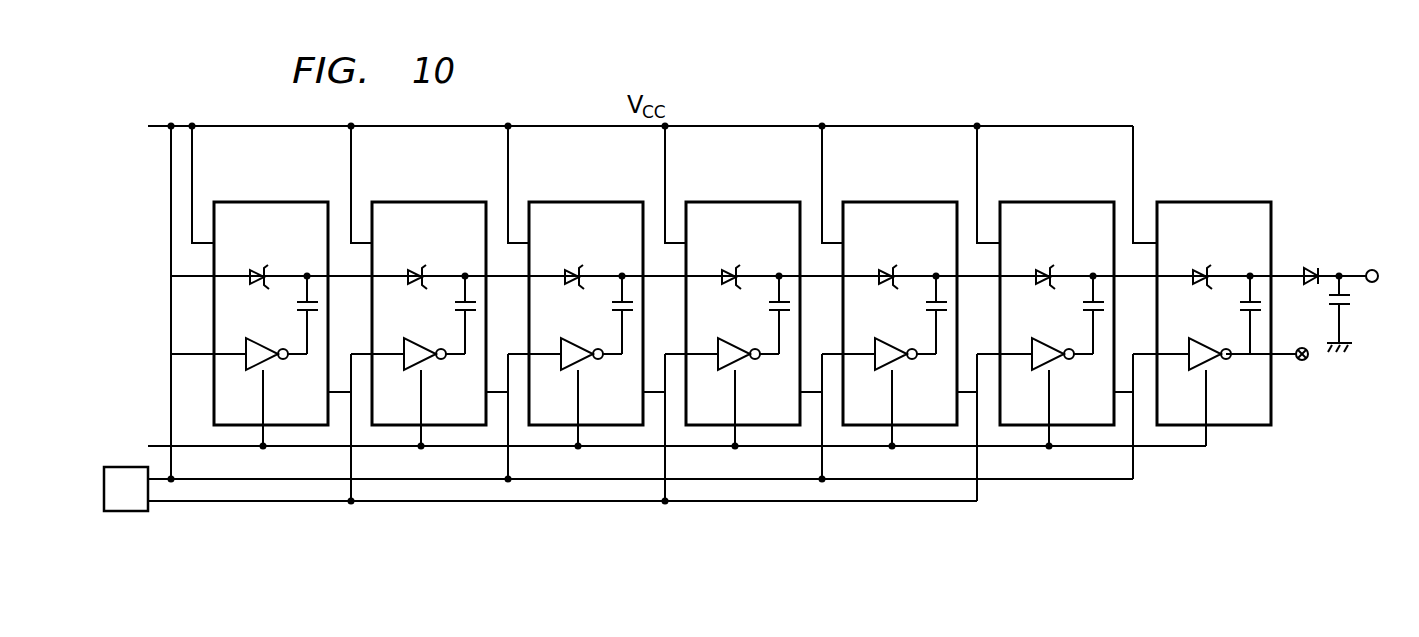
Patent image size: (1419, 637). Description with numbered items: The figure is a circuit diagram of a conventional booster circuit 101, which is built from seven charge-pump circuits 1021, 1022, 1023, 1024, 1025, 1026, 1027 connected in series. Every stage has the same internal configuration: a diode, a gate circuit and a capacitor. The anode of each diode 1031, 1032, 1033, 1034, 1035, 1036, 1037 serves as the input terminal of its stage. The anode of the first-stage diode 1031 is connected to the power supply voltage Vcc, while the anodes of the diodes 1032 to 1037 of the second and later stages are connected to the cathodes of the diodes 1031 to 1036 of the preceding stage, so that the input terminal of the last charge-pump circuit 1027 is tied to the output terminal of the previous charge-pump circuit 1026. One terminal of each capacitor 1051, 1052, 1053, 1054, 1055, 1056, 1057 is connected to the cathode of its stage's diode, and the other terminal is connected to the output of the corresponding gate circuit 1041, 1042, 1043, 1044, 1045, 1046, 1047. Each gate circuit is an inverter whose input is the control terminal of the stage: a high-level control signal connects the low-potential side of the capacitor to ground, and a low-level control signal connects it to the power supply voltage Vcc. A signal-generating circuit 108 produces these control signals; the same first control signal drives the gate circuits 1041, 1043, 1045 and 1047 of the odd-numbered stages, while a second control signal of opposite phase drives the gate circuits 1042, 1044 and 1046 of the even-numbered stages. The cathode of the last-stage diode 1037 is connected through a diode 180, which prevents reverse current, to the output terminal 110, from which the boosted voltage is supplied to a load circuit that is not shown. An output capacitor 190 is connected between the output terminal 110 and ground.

The booster circuit 101 is at (777, 104).
The charge-pump circuit of the first stage 1021 is at (276, 202).
The charge-pump circuit of the second stage 1022 is at (434, 202).
The charge-pump circuit of the third stage 1023 is at (591, 202).
The charge-pump circuit of the fourth stage 1024 is at (748, 202).
The charge-pump circuit of the fifth stage 1025 is at (905, 202).
The charge-pump circuit of the sixth stage 1026 is at (1062, 202).
The charge-pump circuit of the last stage 1027 is at (1219, 202).
The diode of the first stage 1031 is at (258, 263).
The diode of the second stage 1032 is at (416, 263).
The diode of the third stage 1033 is at (573, 263).
The diode of the fourth stage 1034 is at (730, 263).
The diode of the fifth stage 1035 is at (887, 263).
The diode of the sixth stage 1036 is at (1044, 263).
The diode of the last stage 1037 is at (1201, 263).
The gate circuit of the first stage 1041 is at (260, 362).
The gate circuit of the second stage 1042 is at (418, 362).
The gate circuit of the third stage 1043 is at (575, 362).
The gate circuit of the fourth stage 1044 is at (732, 362).
The gate circuit of the fifth stage 1045 is at (889, 362).
The gate circuit of the sixth stage 1046 is at (1046, 362).
The gate circuit of the last stage 1047 is at (1203, 362).
The capacitor of the first stage 1051 is at (292, 303).
The capacitor of the second stage 1052 is at (450, 303).
The capacitor of the third stage 1053 is at (607, 303).
The capacitor of the fourth stage 1054 is at (764, 303).
The capacitor of the fifth stage 1055 is at (921, 303).
The capacitor of the sixth stage 1056 is at (1078, 303).
The capacitor of the last stage 1057 is at (1235, 303).
The signal-generating circuit 108 is at (123, 512).
The diode for preventing reverse current 180 is at (1312, 266).
The output terminal 110 is at (1372, 268).
The output capacitor 190 is at (1353, 300).